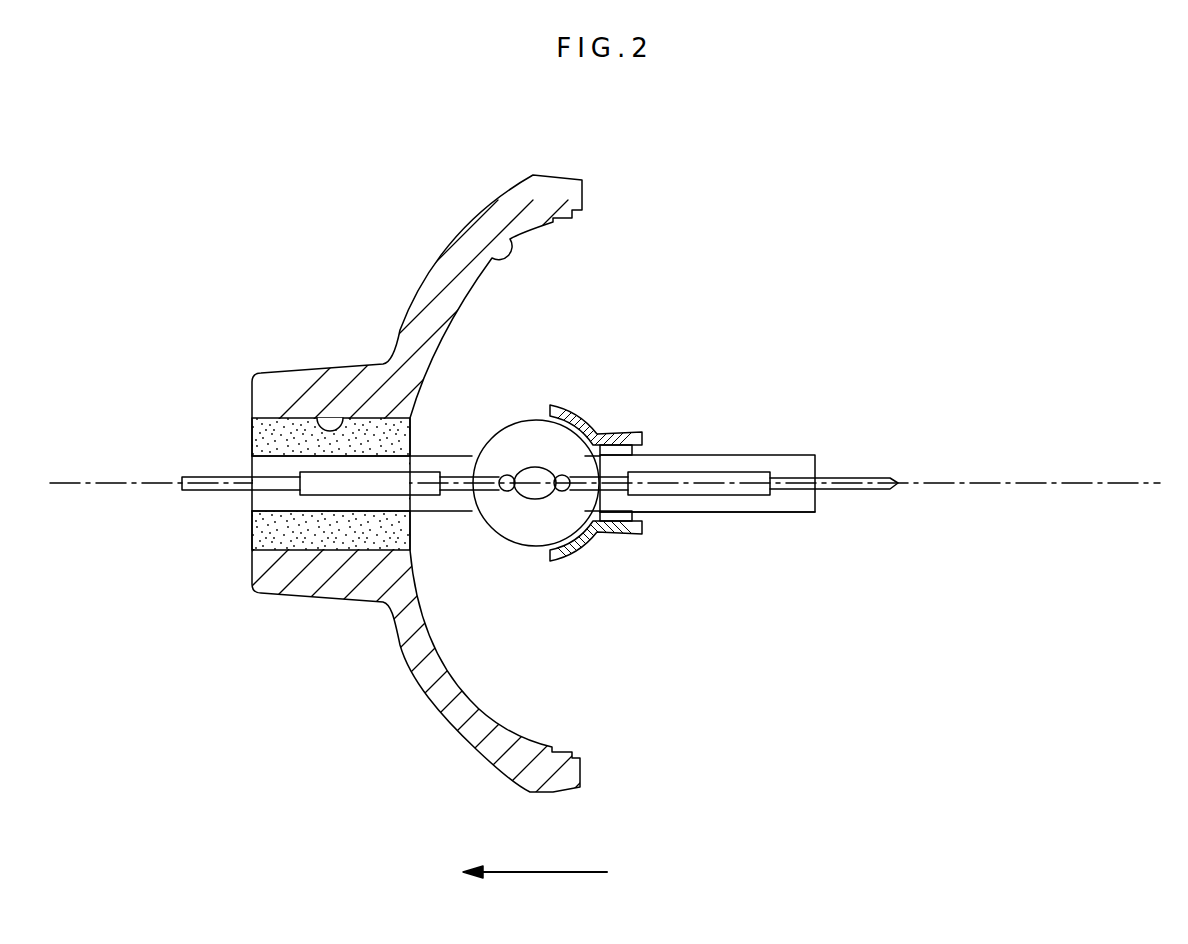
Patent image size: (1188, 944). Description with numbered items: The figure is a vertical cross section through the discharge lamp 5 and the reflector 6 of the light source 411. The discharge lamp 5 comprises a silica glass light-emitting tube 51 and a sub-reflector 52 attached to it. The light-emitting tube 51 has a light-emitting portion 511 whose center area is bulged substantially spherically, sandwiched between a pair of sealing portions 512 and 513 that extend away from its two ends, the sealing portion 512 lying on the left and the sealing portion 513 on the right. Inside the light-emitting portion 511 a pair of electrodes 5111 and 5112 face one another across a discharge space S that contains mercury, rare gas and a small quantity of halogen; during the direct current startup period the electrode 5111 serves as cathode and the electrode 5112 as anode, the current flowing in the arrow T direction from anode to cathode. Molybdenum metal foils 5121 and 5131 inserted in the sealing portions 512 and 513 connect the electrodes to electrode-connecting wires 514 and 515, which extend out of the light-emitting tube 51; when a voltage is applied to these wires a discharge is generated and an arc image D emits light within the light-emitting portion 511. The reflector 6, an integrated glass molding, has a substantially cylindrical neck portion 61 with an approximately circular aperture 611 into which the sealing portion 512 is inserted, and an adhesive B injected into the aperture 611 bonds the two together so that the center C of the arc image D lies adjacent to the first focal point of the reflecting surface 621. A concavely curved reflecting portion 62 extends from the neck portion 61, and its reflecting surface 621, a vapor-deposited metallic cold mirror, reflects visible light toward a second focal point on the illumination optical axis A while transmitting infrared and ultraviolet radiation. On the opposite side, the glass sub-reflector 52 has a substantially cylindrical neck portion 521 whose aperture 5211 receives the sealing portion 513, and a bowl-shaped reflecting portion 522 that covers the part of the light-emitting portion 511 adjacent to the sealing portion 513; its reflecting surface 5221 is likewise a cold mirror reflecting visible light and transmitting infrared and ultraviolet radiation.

The light source 411 is at (1036, 126).
The discharge lamp 5 is at (573, 475).
The light-emitting tube 51 is at (767, 433).
The light-emitting portion 511 is at (495, 437).
The electrode 5111 is at (502, 474).
The electrode 5112 is at (598, 418).
The sealing portion 512 is at (260, 499).
The metal foil 5121 is at (322, 497).
The sealing portion 513 is at (798, 513).
The metal foil 5131 is at (738, 477).
The electrode-connecting wire 514 is at (217, 476).
The electrode-connecting wire 515 is at (878, 492).
The sub-reflector 52 is at (626, 530).
The neck portion 521 is at (632, 428).
The aperture 5211 is at (642, 506).
The reflecting portion 522 is at (593, 614).
The reflecting surface 5221 is at (576, 566).
The reflector 6 is at (594, 497).
The neck portion 61 is at (594, 537).
The aperture 611 is at (328, 405).
The reflecting portion 62 is at (491, 256).
The reflecting surface 621 is at (491, 254).
The illumination optical axis A is at (1153, 480).
The adhesive B is at (258, 533).
The center of the arc image C is at (532, 468).
The arc image D is at (530, 502).
The discharge space S is at (497, 511).
The arrow T direction T is at (535, 873).